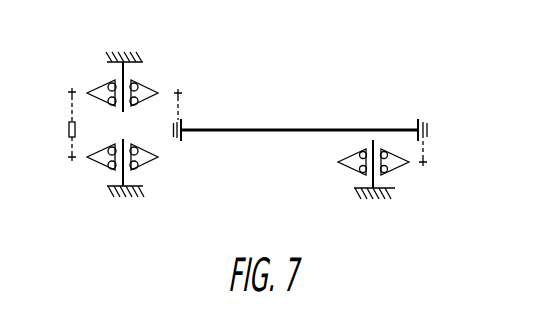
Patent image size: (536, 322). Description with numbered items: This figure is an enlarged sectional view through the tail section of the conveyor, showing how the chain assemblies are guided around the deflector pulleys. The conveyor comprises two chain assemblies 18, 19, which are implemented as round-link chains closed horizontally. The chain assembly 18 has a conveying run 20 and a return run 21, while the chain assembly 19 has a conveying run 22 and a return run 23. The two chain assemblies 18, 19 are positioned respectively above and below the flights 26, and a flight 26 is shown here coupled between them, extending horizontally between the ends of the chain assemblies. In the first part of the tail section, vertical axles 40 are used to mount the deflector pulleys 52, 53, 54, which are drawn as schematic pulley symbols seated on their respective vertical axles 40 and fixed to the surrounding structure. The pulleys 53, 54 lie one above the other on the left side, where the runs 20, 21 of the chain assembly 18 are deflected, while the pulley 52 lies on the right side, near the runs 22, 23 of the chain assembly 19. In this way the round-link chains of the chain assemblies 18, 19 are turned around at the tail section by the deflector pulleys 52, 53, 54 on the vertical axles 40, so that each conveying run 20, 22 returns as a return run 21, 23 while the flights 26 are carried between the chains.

The chain assembly 18 is at (189, 87).
The chain assembly 19 is at (434, 170).
The conveying run 20 is at (183, 96).
The return run 21 is at (70, 91).
The conveying run 22 is at (430, 161).
The return run 23 is at (67, 165).
The flight 26 is at (306, 128).
The vertical axle 40 is at (127, 70).
The deflector pulley 52 is at (402, 168).
The deflector pulley 53 is at (98, 89).
The deflector pulley 54 is at (99, 167).